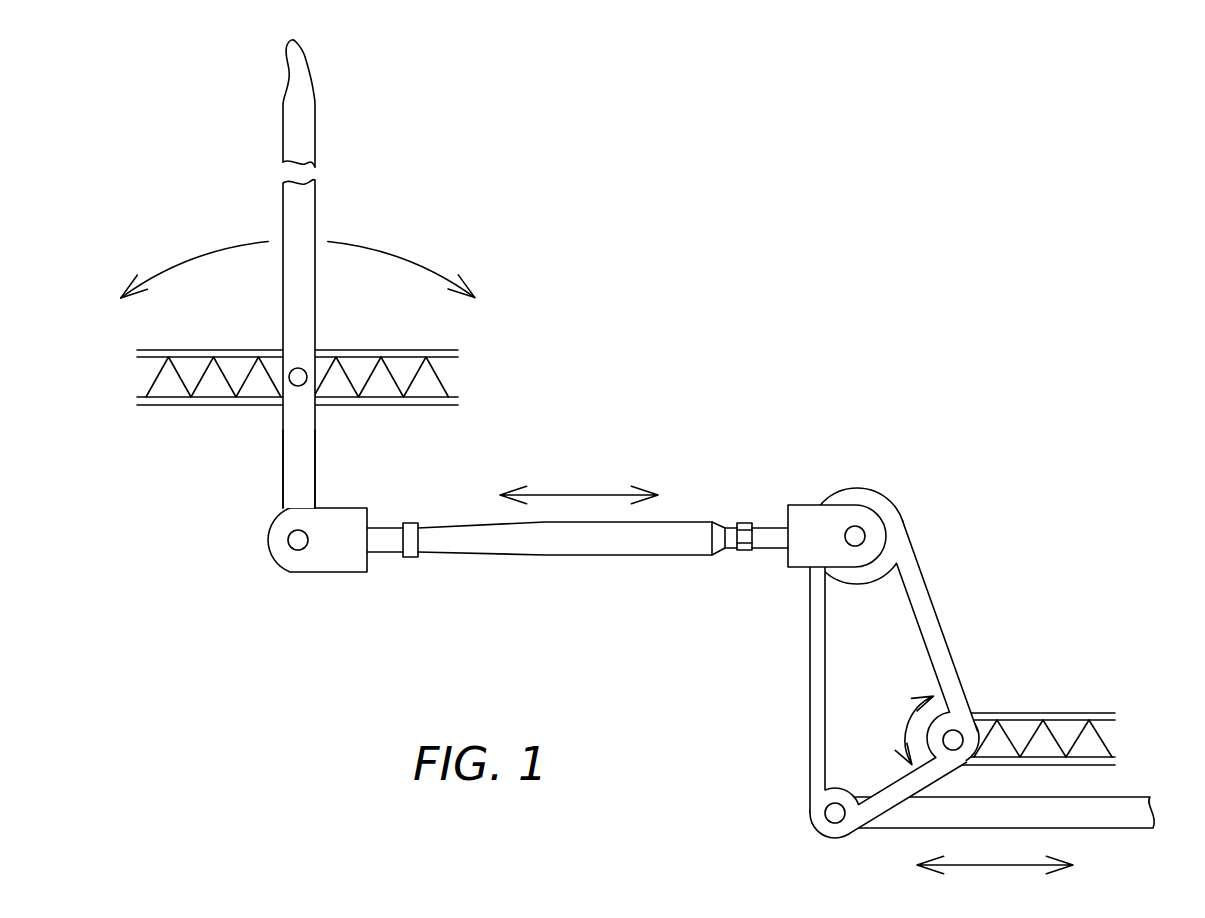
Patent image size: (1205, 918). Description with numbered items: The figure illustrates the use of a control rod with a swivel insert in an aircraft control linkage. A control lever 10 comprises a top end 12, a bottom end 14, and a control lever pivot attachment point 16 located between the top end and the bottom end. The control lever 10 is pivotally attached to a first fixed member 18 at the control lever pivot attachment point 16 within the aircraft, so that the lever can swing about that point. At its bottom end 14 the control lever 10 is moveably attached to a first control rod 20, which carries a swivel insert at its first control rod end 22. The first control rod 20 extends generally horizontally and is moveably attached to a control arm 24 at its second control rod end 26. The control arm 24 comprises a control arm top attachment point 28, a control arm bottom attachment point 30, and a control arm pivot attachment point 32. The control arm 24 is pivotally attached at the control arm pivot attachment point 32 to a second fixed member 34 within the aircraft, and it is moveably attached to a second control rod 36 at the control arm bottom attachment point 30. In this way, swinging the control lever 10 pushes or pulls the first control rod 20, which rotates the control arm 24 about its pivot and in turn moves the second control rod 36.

The control lever 10 is at (317, 306).
The top end 12 is at (310, 75).
The bottom end 14 is at (315, 483).
The control lever pivot attachment point 16 is at (297, 387).
The first fixed member 18 is at (228, 350).
The first control rod 20 is at (680, 520).
The first control rod end 22 is at (290, 573).
The control arm 24 is at (908, 534).
The second control rod end 26 is at (803, 505).
The control arm top attachment point 28 is at (856, 527).
The control arm bottom attachment point 30 is at (834, 814).
The control arm pivot attachment point 32 is at (953, 730).
The second fixed member 34 is at (1068, 713).
The second control rod 36 is at (1132, 795).